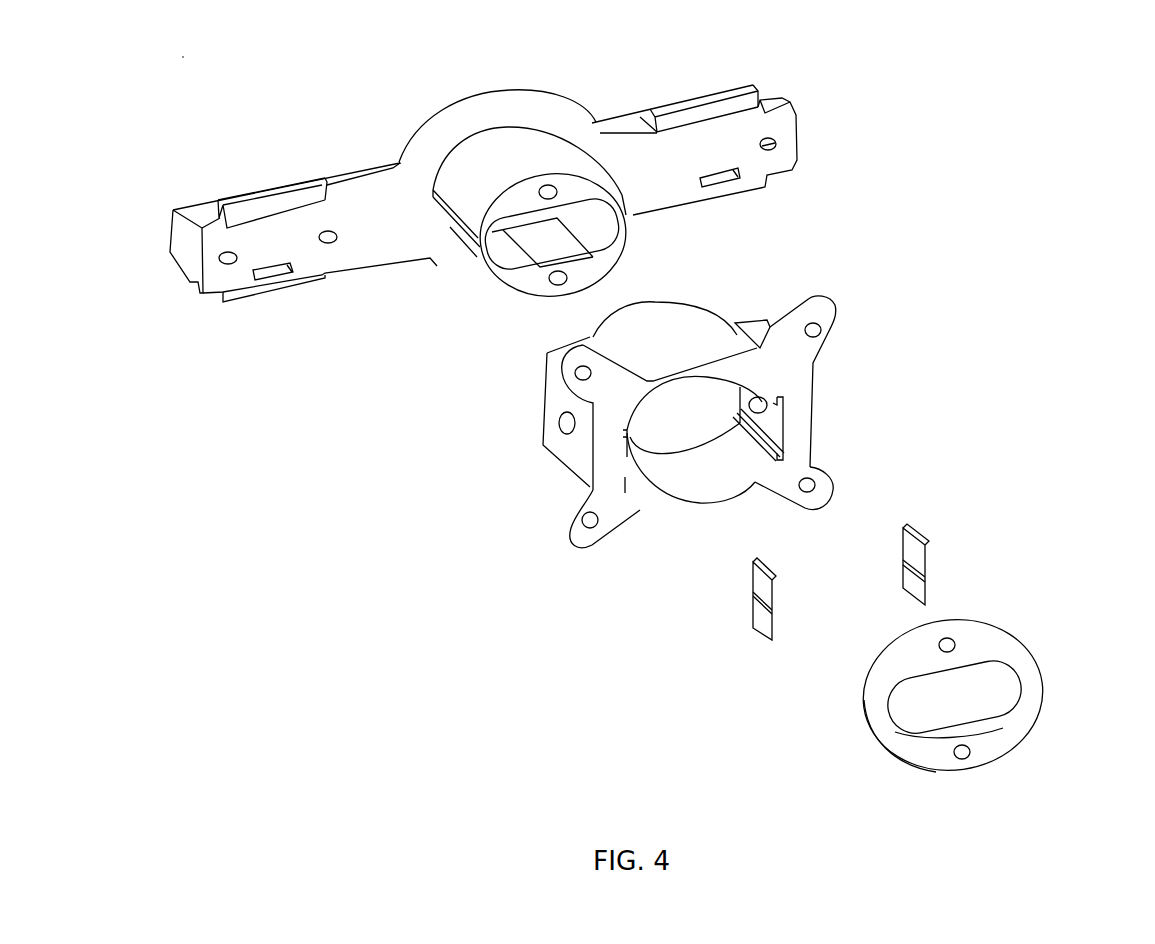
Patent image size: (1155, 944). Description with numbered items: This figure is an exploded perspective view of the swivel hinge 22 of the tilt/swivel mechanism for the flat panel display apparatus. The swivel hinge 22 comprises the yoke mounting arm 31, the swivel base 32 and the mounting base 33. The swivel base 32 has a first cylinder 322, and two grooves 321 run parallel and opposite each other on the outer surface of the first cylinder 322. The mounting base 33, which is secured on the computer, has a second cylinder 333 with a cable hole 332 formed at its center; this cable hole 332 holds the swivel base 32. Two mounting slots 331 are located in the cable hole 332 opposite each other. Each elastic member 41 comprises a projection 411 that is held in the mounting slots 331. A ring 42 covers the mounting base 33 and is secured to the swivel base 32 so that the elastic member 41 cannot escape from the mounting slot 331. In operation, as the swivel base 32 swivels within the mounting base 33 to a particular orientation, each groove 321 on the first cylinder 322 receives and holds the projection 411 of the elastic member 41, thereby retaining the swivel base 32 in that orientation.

The swivel hinge 22 is at (481, 45).
The yoke mounting arm 31 is at (347, 170).
The swivel base 32 is at (541, 140).
The groove 321 is at (440, 248).
The first cylinder 322 is at (516, 198).
The mounting base 33 is at (727, 310).
The mounting slot 331 is at (625, 457).
The cable hole 332 is at (687, 400).
The second cylinder 333 is at (676, 341).
The elastic member 41 is at (777, 592).
The projection 411 is at (762, 606).
The ring 42 is at (1032, 651).